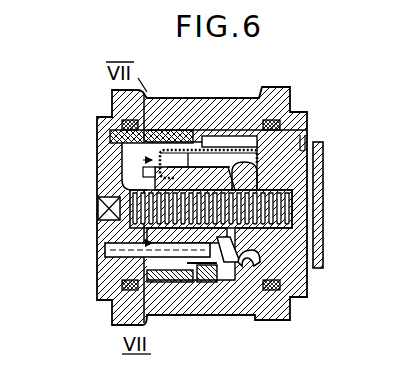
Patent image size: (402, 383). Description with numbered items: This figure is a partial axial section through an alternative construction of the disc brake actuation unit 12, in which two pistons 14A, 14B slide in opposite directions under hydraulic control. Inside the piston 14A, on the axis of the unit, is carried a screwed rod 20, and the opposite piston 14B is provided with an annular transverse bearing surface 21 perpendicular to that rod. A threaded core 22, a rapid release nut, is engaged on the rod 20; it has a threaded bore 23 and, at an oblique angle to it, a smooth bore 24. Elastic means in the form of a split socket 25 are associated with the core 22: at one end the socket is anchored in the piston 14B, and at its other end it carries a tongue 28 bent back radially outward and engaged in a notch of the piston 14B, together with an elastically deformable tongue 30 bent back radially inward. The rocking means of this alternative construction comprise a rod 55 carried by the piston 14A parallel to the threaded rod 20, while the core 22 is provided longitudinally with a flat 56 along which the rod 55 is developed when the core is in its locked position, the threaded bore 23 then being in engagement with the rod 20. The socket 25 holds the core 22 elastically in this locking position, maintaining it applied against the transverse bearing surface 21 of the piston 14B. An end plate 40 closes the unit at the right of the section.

The actuation unit 12 is at (163, 95).
The piston 14A is at (96, 236).
The piston 14B is at (300, 267).
The screwed rod 20 is at (317, 180).
The annular transverse bearing surface 21 is at (233, 226).
The threaded core 22 is at (218, 163).
The threaded bore 23 is at (104, 190).
The smooth bore 24 is at (293, 197).
The split socket 25 is at (252, 253).
The tongue 28 is at (213, 263).
The elastically deformable tongue 30 is at (104, 176).
The end plate 40 is at (323, 204).
The rod 55 is at (102, 262).
The flat 56 is at (225, 270).